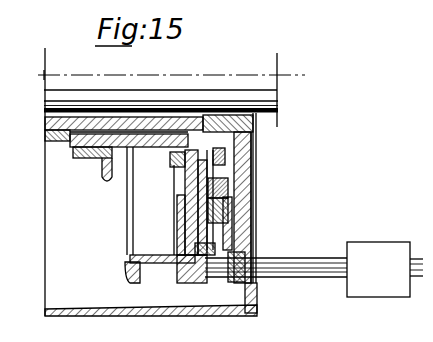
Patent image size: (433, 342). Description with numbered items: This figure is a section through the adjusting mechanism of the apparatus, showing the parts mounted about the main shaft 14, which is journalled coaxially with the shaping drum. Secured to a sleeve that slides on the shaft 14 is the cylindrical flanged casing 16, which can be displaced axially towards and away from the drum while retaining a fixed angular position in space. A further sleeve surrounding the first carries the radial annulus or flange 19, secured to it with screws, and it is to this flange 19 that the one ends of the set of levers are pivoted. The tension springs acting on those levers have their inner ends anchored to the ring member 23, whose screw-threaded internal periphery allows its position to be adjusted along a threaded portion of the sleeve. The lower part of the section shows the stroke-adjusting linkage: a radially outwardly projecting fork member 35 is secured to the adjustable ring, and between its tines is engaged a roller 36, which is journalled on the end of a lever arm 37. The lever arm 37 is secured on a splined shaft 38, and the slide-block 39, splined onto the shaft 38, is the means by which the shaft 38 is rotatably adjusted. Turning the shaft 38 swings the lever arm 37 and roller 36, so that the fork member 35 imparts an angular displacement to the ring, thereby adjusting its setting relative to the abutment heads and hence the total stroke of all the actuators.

The shaft 14 is at (223, 90).
The cylindrical flanged casing 16 is at (243, 162).
The radial annulus or flange 19 is at (188, 277).
The ring member 23 is at (102, 178).
The fork member 35 is at (226, 186).
The roller 36 is at (177, 238).
The lever arm 37 is at (229, 224).
The splined shaft 38 is at (277, 258).
The slide-block 39 is at (383, 258).